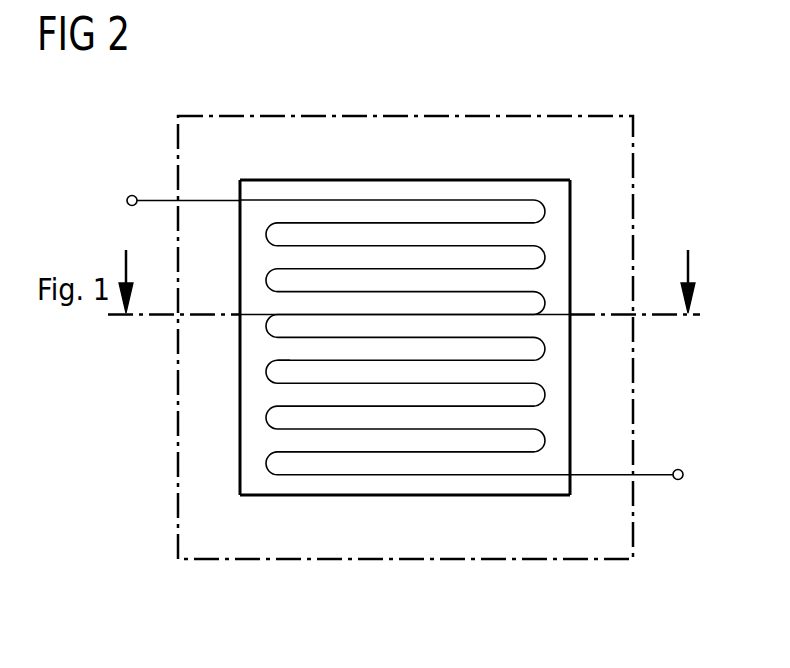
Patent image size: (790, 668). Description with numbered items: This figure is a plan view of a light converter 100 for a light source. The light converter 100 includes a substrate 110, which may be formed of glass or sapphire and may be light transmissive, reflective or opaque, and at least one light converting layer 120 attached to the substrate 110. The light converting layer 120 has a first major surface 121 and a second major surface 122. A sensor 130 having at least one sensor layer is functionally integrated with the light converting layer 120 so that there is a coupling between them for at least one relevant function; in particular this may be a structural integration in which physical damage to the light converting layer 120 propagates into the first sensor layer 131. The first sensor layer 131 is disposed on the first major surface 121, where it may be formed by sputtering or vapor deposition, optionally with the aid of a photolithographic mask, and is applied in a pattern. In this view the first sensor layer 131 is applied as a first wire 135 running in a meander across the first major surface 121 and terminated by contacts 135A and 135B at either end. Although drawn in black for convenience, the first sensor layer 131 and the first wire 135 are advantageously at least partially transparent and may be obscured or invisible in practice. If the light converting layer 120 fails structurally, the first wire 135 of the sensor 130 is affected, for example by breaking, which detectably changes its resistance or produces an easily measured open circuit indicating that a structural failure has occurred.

The light converter 100 is at (549, 90).
The substrate 110 is at (627, 150).
The light converting layer 120 is at (570, 258).
The first major surface 121 is at (405, 193).
The second major surface 122 is at (407, 398).
The sensor 130 is at (540, 378).
The first sensor layer 131 is at (262, 387).
The first wire 135 is at (540, 247).
The contact 135A is at (152, 197).
The contact 135B is at (660, 472).